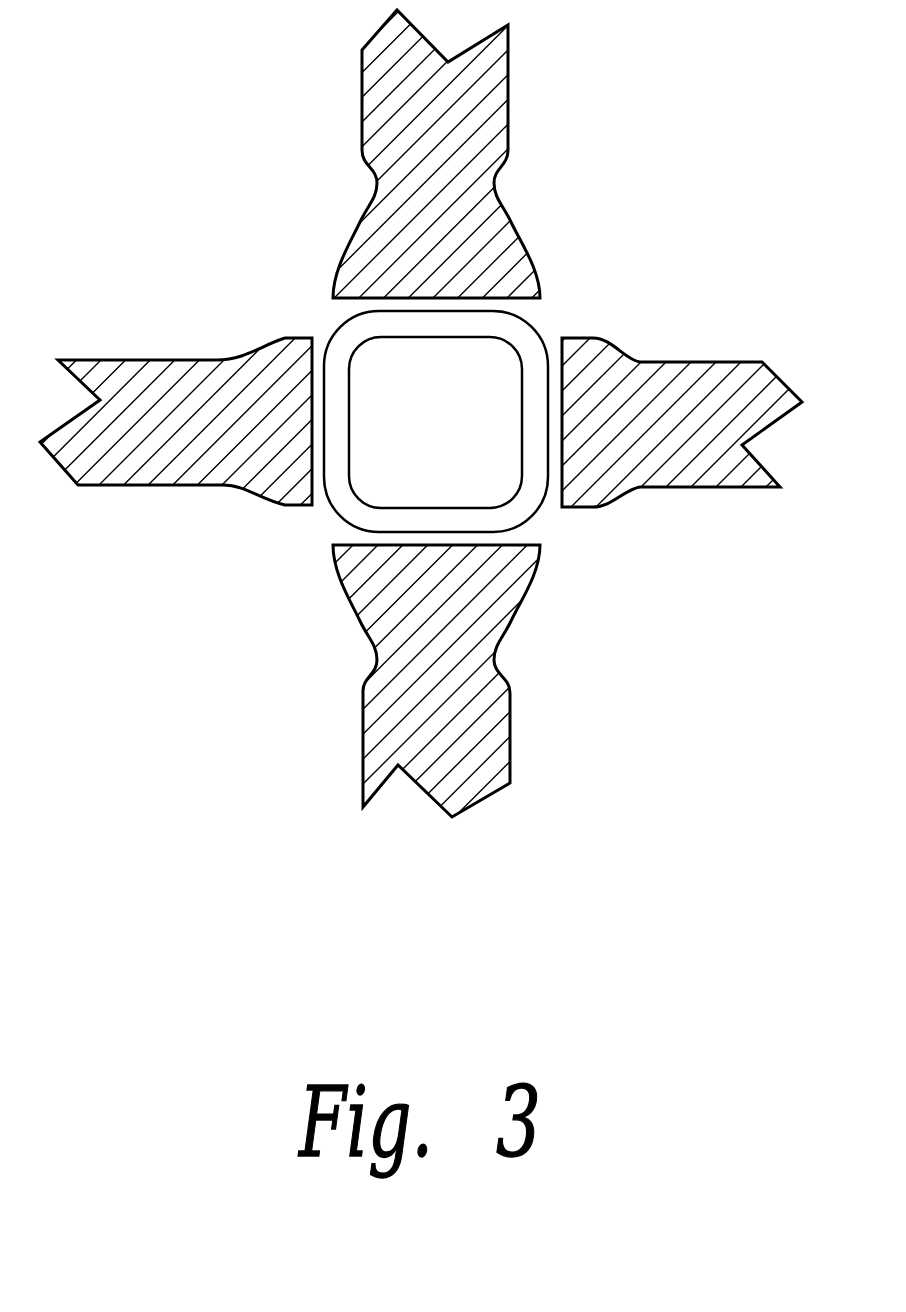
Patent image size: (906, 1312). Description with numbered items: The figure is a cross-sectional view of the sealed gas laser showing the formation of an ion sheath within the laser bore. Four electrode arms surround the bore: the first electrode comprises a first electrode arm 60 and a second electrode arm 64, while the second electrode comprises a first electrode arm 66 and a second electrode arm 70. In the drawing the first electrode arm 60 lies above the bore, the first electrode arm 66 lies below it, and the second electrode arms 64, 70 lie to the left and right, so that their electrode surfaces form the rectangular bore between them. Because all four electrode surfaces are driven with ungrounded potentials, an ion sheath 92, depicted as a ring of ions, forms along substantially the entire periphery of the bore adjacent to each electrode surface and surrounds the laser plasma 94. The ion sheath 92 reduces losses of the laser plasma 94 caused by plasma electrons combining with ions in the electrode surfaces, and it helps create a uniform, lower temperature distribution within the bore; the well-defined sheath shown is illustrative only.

The first electrode arm 60 is at (490, 117).
The second electrode arm 64 is at (182, 470).
The first electrode arm 66 is at (490, 708).
The second electrode arm 70 is at (705, 462).
The ion sheath 92 is at (522, 508).
The laser plasma 94 is at (392, 453).